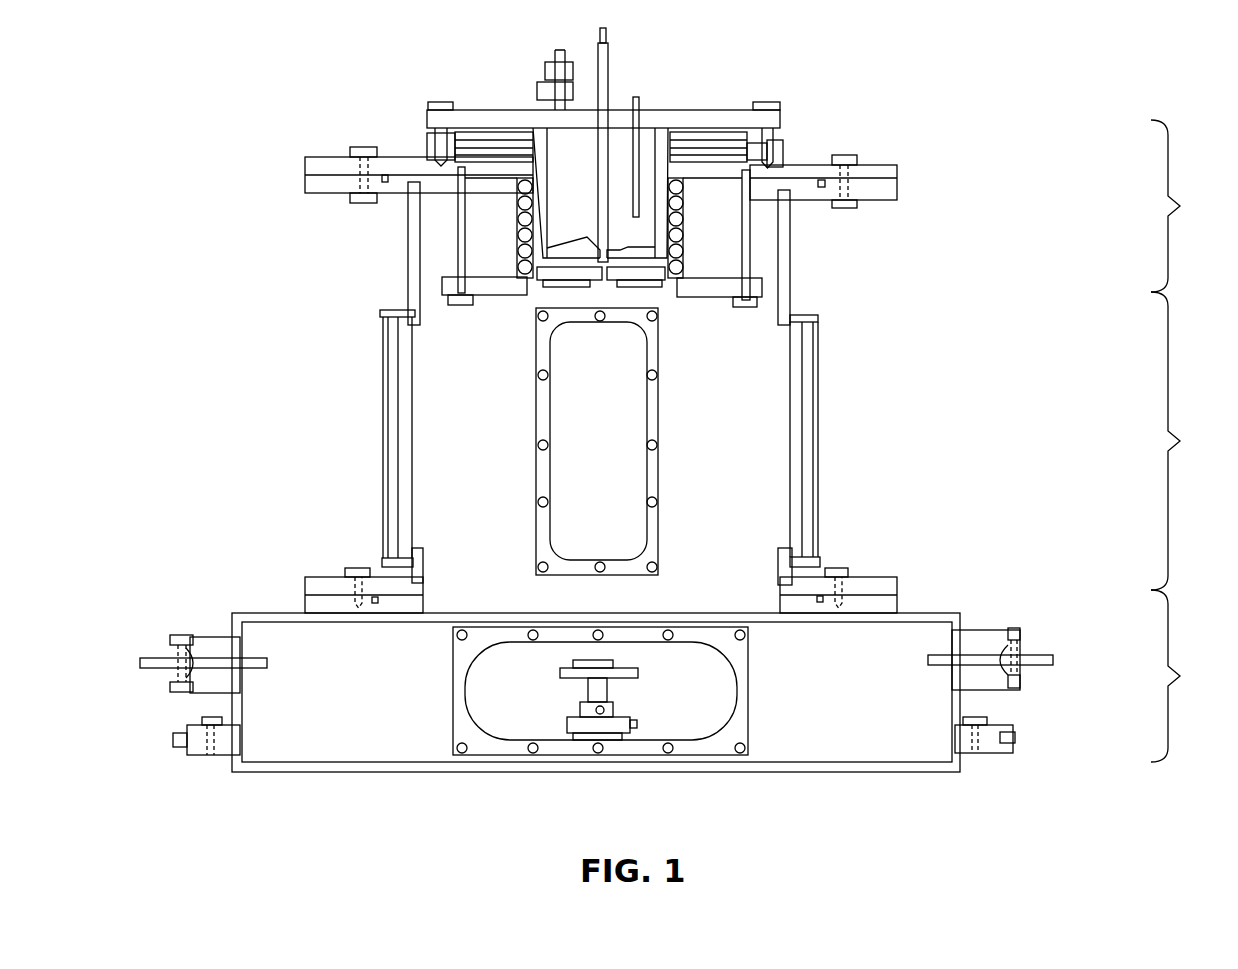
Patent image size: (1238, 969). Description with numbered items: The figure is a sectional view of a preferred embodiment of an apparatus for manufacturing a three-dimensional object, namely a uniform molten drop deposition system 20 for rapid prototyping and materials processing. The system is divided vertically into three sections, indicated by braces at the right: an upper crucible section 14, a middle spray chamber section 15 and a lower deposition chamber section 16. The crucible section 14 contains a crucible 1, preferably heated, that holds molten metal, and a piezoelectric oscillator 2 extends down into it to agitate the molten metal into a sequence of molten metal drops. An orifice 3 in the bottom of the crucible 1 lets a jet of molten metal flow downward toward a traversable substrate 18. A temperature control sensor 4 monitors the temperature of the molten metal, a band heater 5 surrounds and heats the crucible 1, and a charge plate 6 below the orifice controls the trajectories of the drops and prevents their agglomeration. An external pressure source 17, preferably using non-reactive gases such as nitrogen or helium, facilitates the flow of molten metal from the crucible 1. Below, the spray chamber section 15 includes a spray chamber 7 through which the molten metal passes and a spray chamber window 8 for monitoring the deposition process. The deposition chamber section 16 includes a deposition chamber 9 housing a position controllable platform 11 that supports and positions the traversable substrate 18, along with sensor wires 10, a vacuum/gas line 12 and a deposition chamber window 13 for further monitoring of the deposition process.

The crucible 1 is at (560, 140).
The piezoelectric oscillator 2 is at (608, 52).
The orifice 3 is at (583, 238).
The temperature control sensor 4 is at (650, 107).
The band heater 5 is at (682, 212).
The charge plate 6 is at (640, 285).
The spray chamber 7 is at (383, 397).
The spray chamber window 8 is at (563, 452).
The deposition chamber 9 is at (928, 608).
The sensor wires 10 is at (140, 660).
The position controllable platform 11 is at (617, 707).
The vacuum/gas line 12 is at (175, 742).
The deposition chamber window 13 is at (685, 713).
The crucible section 14 is at (1185, 206).
The spray chamber section 15 is at (1185, 441).
The deposition chamber section 16 is at (1185, 676).
The external pressure source 17 is at (553, 53).
The traversable substrate 18 is at (572, 667).
The uniform molten drop deposition system 20 is at (887, 165).